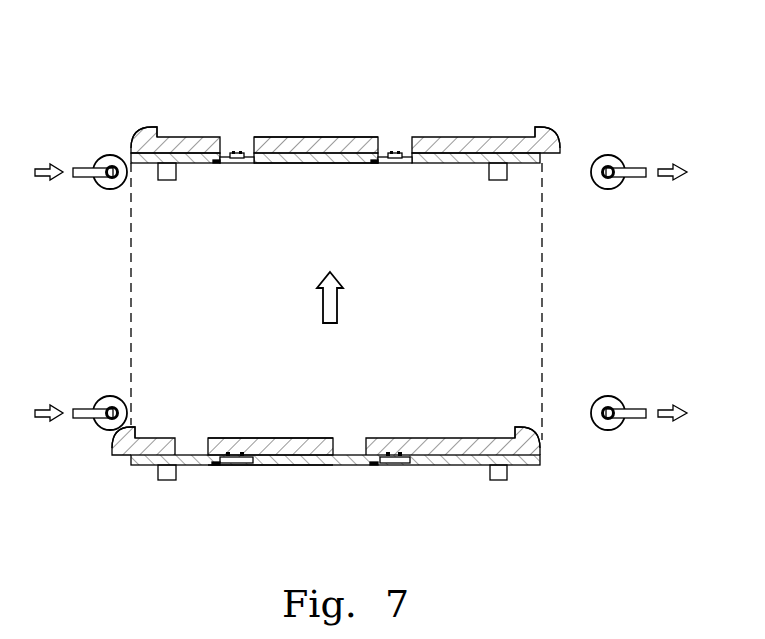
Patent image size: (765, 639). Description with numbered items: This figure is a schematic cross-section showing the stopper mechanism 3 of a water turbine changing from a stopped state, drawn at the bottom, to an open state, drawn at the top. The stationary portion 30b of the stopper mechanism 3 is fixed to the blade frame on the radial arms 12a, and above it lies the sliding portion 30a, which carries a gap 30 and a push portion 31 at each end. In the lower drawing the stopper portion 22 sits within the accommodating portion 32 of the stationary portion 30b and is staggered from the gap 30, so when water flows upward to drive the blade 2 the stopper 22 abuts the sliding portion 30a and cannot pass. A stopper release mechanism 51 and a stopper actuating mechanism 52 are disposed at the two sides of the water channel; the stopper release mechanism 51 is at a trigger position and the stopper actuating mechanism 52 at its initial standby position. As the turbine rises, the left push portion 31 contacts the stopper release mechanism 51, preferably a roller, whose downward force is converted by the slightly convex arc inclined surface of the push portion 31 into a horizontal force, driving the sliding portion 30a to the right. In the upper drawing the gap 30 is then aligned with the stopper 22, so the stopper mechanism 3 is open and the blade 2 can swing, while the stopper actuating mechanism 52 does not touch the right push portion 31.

The blade 2 is at (245, 164).
The stopper mechanism 3 is at (438, 124).
The radial arm 12a is at (167, 180).
The stopper portion 22 is at (227, 145).
The gap 30 is at (225, 147).
The sliding portion 30a is at (311, 139).
The stationary portion 30b is at (300, 164).
The push portion 31 is at (143, 135).
The accommodating portion 32 is at (217, 164).
The stopper release mechanism 51 is at (84, 150).
The stopper actuating mechanism 52 is at (637, 153).